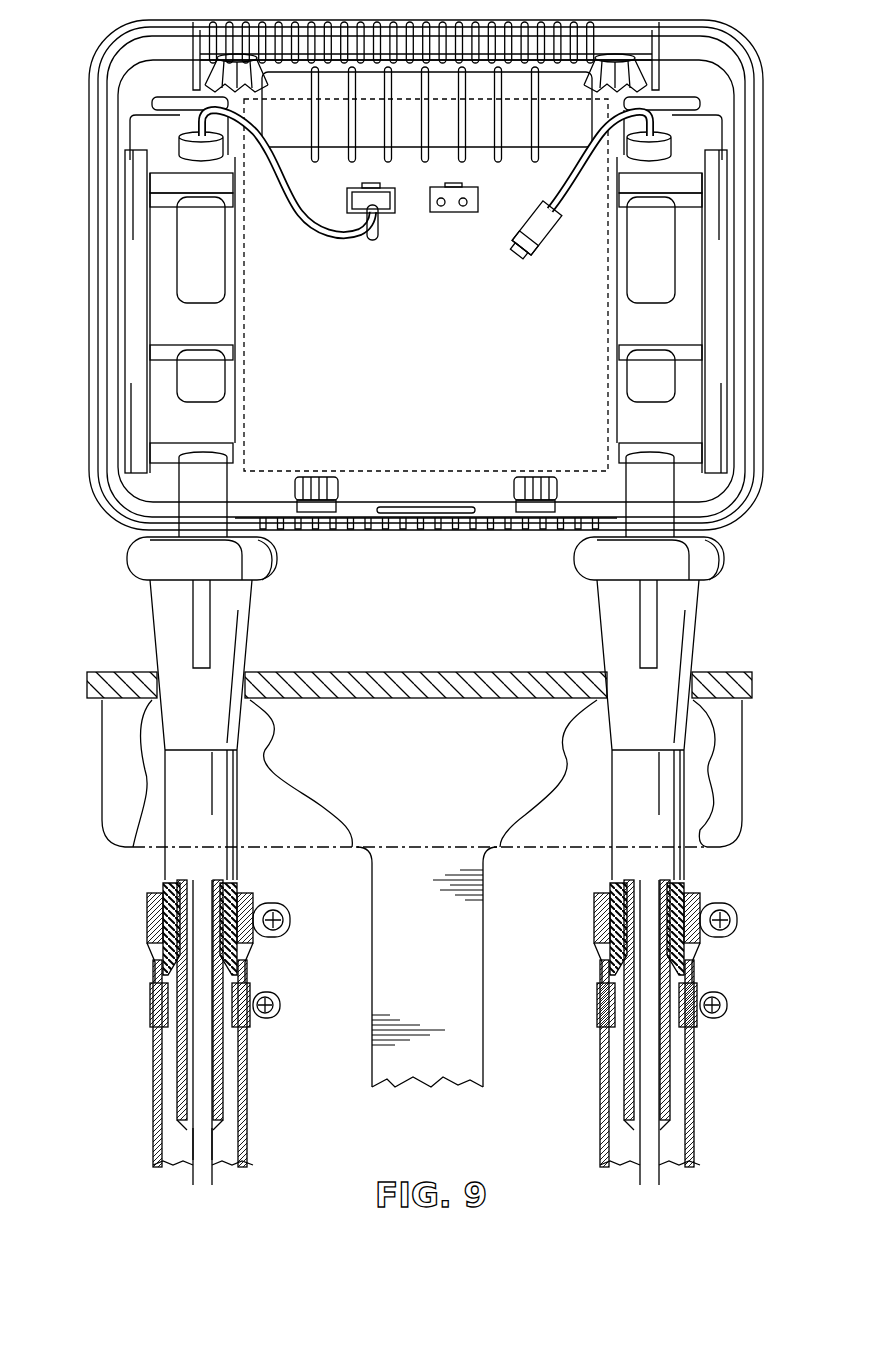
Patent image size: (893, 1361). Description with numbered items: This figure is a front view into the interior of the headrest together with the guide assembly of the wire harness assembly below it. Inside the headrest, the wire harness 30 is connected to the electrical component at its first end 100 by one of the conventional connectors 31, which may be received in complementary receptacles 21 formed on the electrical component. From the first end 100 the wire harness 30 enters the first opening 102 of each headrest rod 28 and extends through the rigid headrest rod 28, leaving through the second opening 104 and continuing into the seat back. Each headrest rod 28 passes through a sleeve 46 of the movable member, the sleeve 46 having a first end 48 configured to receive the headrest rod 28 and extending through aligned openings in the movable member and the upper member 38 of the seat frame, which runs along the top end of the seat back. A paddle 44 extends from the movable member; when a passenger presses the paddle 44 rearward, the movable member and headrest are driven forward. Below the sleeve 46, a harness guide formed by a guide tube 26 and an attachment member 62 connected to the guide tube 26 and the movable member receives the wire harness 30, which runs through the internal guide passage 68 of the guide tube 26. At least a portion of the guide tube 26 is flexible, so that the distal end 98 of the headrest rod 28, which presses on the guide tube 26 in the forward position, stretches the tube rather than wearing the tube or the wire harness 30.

The receptacle 21 is at (397, 199).
The guide tube 26 is at (158, 1080).
The headrest rod 28 is at (192, 487).
The wire harness 30 is at (207, 133).
The connector 31 is at (385, 213).
The upper member 38 is at (100, 680).
The paddle 44 is at (463, 1028).
The sleeve 46 is at (207, 827).
The first end 48 is at (260, 564).
The attachment member 62 is at (142, 980).
The internal guide passage 68 is at (228, 1153).
The distal end 98 is at (177, 1117).
The first end 100 is at (374, 242).
The first opening 102 is at (201, 135).
The second opening 104 is at (193, 1132).